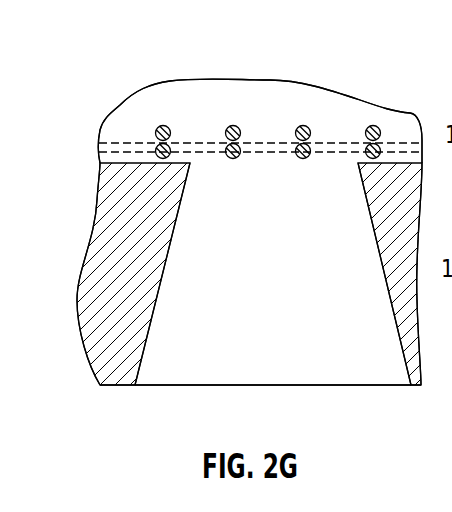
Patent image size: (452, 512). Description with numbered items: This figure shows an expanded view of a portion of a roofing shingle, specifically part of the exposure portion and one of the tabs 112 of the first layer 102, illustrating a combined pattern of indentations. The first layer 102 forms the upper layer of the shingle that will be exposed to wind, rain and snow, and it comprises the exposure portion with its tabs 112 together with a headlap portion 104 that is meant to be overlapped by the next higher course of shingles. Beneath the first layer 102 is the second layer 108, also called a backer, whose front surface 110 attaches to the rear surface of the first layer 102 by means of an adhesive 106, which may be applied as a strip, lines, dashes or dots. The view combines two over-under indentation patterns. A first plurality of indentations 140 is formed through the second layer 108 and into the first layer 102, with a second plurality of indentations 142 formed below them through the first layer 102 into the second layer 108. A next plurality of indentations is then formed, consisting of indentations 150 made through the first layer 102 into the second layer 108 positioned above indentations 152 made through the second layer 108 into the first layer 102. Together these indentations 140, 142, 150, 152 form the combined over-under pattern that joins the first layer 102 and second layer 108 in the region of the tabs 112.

The first layer 102 is at (167, 98).
The headlap portion 104 is at (133, 123).
The adhesive 106 is at (100, 145).
The second layer 108 is at (117, 293).
The front surface 110 is at (115, 198).
The tabs 112 is at (182, 245).
The first plurality of indentations 140 is at (164, 125).
The first plurality of indentations 150 is at (232, 125).
The second plurality of indentations 142 is at (308, 146).
The second plurality of indentations 152 is at (378, 145).